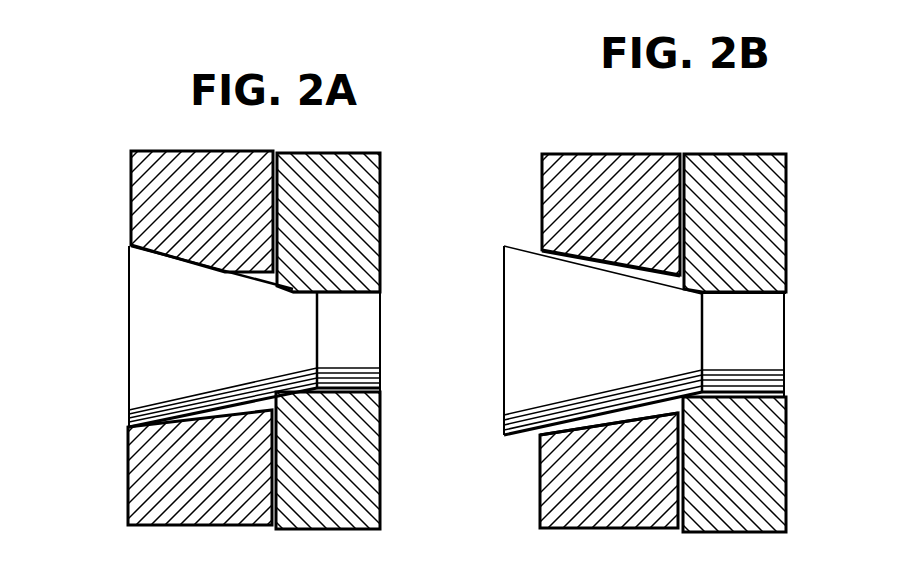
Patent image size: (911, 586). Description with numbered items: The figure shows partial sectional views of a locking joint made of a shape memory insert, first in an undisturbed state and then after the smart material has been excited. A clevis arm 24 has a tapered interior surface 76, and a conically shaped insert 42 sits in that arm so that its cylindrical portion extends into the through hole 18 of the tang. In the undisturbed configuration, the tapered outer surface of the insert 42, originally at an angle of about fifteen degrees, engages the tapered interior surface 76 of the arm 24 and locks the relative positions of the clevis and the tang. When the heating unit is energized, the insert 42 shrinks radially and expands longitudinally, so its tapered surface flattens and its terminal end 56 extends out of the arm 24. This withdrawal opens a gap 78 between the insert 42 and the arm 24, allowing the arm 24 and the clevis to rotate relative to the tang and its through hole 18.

In FIG. 2A, the through hole 18 is at (362, 194).
In FIG. 2B, the through hole 18 is at (784, 208).
In FIG. 2A, the clevis arm 24 is at (135, 189).
In FIG. 2B, the clevis arm 24 is at (617, 160).
In FIG. 2A, the conical insert 42 is at (140, 297).
In FIG. 2B, the conical insert 42 is at (518, 346).
In FIG. 2B, the terminal end 56 is at (505, 438).
In FIG. 2B, the tapered interior surface 76 is at (548, 258).
In FIG. 2B, the gap 78 is at (537, 436).